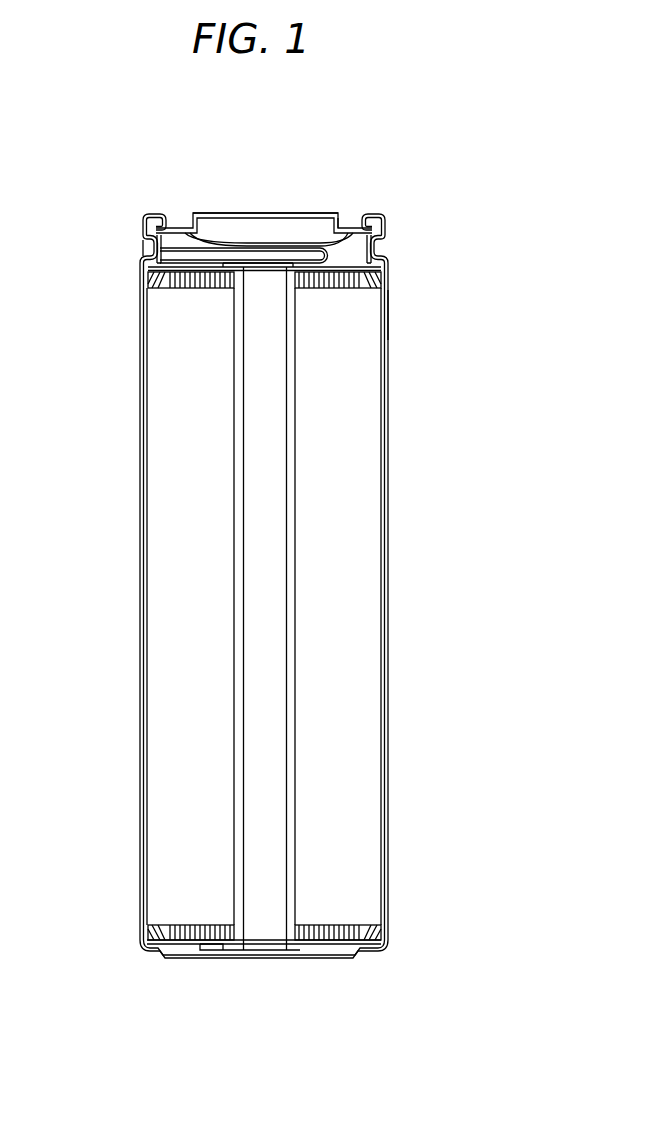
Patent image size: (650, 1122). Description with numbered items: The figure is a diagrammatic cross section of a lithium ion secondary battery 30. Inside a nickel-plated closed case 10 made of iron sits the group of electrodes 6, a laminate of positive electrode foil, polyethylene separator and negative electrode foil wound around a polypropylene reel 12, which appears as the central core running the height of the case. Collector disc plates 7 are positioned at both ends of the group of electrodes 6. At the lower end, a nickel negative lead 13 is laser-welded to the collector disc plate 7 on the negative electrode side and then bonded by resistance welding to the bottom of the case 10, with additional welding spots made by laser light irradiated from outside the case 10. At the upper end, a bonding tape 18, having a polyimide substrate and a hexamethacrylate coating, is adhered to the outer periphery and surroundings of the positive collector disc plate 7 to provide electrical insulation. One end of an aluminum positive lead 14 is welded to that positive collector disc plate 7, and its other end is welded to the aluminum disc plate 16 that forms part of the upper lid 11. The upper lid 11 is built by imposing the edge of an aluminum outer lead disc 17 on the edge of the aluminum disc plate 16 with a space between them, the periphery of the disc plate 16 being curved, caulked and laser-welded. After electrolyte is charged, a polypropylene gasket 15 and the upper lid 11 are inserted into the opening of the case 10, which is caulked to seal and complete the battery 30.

The lithium ion secondary battery 30 is at (313, 169).
The outer lead disc 17 is at (212, 215).
The aluminum disc plate 16 is at (297, 217).
The upper lid 11 is at (340, 218).
The gasket 15 is at (153, 233).
The positive lead 14 is at (380, 250).
The collector disc plate 7 is at (160, 268).
The bonding tape 18 is at (388, 315).
The case 10 is at (142, 397).
The group of electrodes 6 is at (167, 495).
The reel 12 is at (235, 633).
The negative lead 13 is at (220, 952).